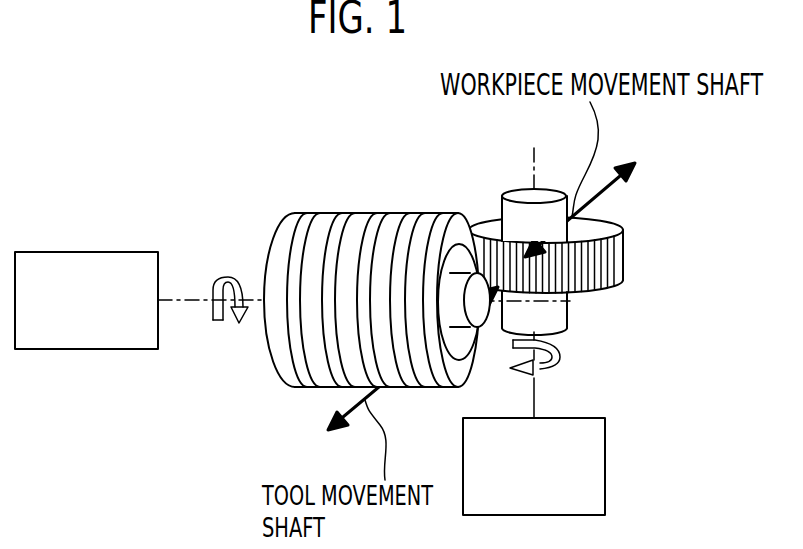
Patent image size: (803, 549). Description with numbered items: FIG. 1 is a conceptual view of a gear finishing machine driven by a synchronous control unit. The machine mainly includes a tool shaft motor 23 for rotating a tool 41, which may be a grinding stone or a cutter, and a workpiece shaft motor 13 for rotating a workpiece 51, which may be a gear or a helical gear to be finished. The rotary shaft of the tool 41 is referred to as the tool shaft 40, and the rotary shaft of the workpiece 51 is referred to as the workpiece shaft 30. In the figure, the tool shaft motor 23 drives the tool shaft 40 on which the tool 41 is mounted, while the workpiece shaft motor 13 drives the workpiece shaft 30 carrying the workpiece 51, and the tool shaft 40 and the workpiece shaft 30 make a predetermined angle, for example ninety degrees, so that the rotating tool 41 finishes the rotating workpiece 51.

The workpiece shaft motor 13 is at (605, 474).
The tool shaft motor 23 is at (90, 350).
The workpiece shaft 30 is at (536, 397).
The tool shaft 40 is at (182, 285).
The tool 41 is at (277, 358).
The workpiece 51 is at (597, 225).